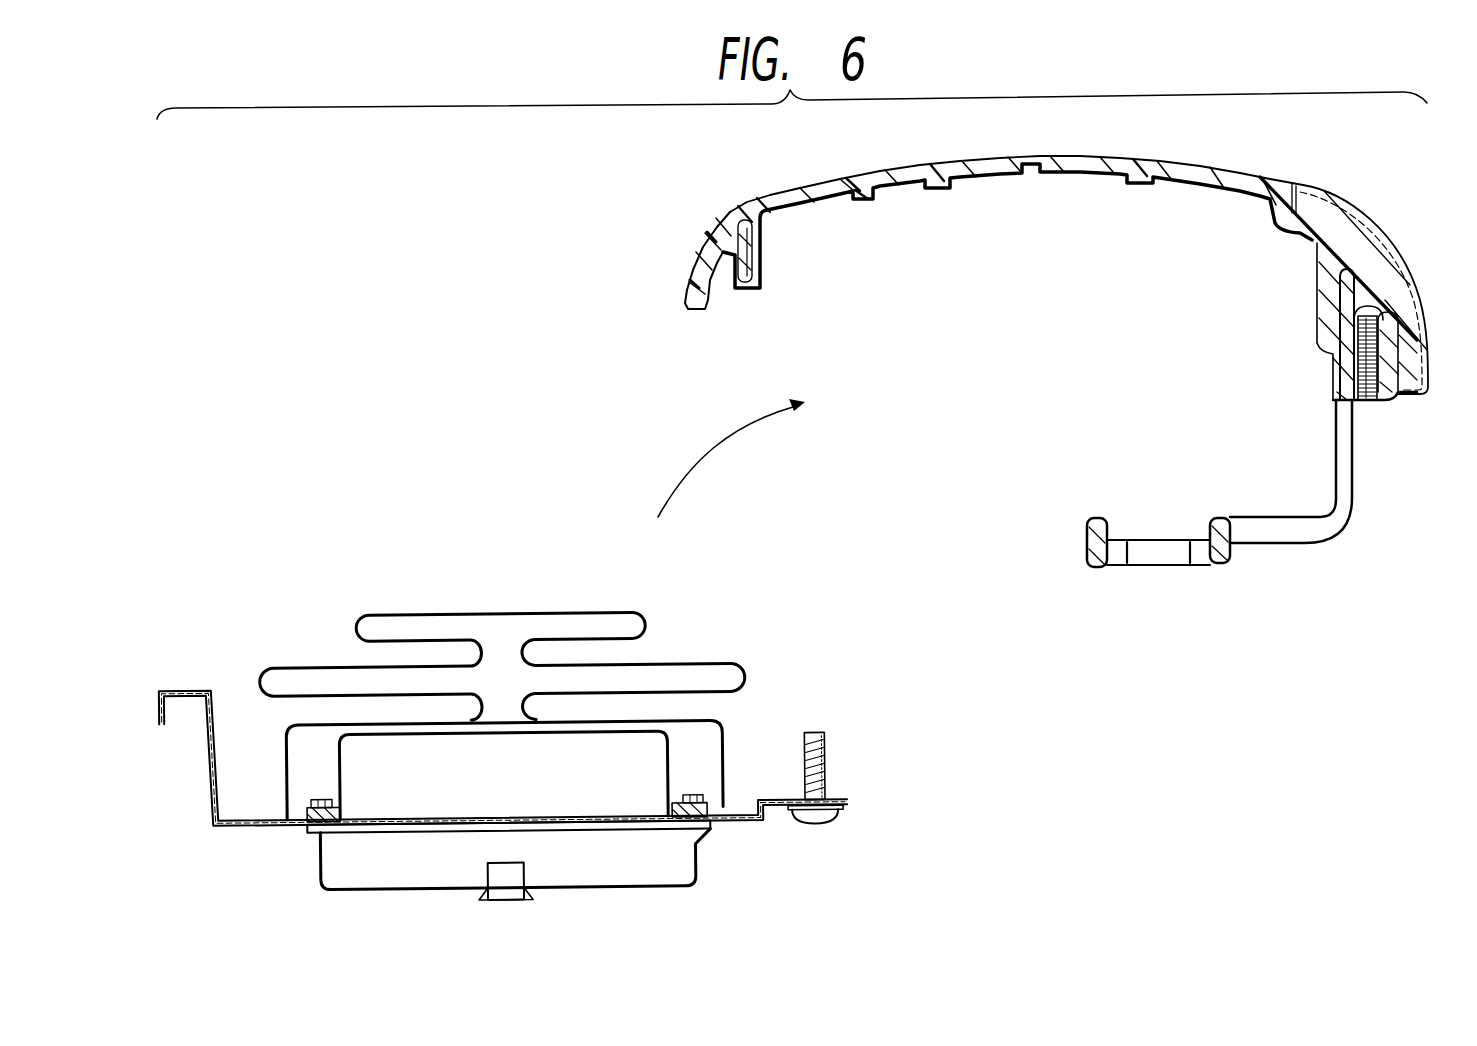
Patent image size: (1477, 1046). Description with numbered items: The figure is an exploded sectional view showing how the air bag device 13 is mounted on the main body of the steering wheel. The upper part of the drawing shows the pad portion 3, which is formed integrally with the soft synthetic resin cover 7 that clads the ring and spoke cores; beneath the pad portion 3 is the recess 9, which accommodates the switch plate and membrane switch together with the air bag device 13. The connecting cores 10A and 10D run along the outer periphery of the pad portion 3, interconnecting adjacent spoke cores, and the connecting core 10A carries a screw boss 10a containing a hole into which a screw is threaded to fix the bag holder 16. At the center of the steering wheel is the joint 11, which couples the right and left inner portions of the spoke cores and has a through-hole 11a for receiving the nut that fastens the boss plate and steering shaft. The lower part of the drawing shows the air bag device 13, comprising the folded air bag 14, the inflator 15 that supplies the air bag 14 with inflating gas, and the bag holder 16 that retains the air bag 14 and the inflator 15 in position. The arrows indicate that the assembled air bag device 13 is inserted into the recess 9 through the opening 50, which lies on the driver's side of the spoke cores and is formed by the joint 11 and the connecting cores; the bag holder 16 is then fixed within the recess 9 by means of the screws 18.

The pad portion 3 is at (1062, 152).
The cover 7 is at (1344, 196).
The recess 9 is at (1050, 260).
The connecting core 10D is at (758, 268).
The connecting core 10A is at (1337, 272).
The screw boss 10a is at (1387, 342).
The joint 11 is at (1217, 517).
The through-hole 11a is at (1112, 552).
The air bag device 13 is at (294, 588).
The air bag 14 is at (545, 616).
The inflator 15 is at (634, 881).
The bag holder 16 is at (215, 805).
The screw 18 is at (822, 831).
The opening 50 is at (928, 466).